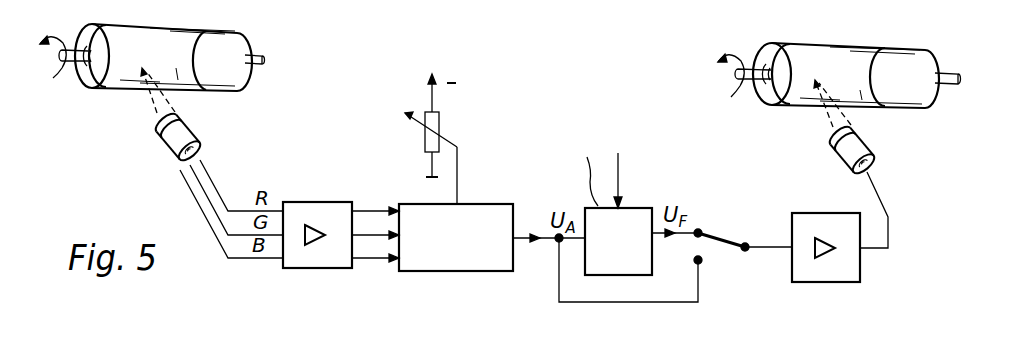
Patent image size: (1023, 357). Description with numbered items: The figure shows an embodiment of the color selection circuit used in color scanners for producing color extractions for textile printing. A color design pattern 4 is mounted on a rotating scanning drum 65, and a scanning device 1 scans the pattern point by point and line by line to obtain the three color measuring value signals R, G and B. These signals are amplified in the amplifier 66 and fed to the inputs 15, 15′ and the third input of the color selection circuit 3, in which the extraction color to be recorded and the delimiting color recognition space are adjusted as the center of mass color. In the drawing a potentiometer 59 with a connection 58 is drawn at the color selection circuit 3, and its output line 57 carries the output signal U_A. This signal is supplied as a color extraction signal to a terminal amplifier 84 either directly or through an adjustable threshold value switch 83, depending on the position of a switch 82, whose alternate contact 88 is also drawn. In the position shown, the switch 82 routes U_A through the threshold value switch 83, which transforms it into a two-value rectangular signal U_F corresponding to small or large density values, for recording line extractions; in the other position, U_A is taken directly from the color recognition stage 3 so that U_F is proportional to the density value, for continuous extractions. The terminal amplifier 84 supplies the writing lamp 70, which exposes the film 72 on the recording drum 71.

The scanning device 1 is at (157, 135).
The color design pattern 4 is at (178, 68).
The scanning drum 65 is at (220, 63).
The input of the color selection circuit 15 is at (367, 210).
The input of the color selection circuit 15′ is at (382, 237).
The amplifier 66 is at (328, 262).
The color selection circuit 3 is at (418, 262).
The potentiometer 59 is at (440, 124).
The reference voltage line 58 is at (458, 204).
The output line (U_A) 57 is at (518, 234).
The threshold value switch 83 is at (641, 207).
The switch 82 is at (723, 237).
The feedback contact 88 is at (646, 297).
The terminal amplifier 84 is at (840, 269).
The writing lamp 70 is at (838, 148).
The recording drum 71 is at (918, 88).
The film 72 is at (860, 90).